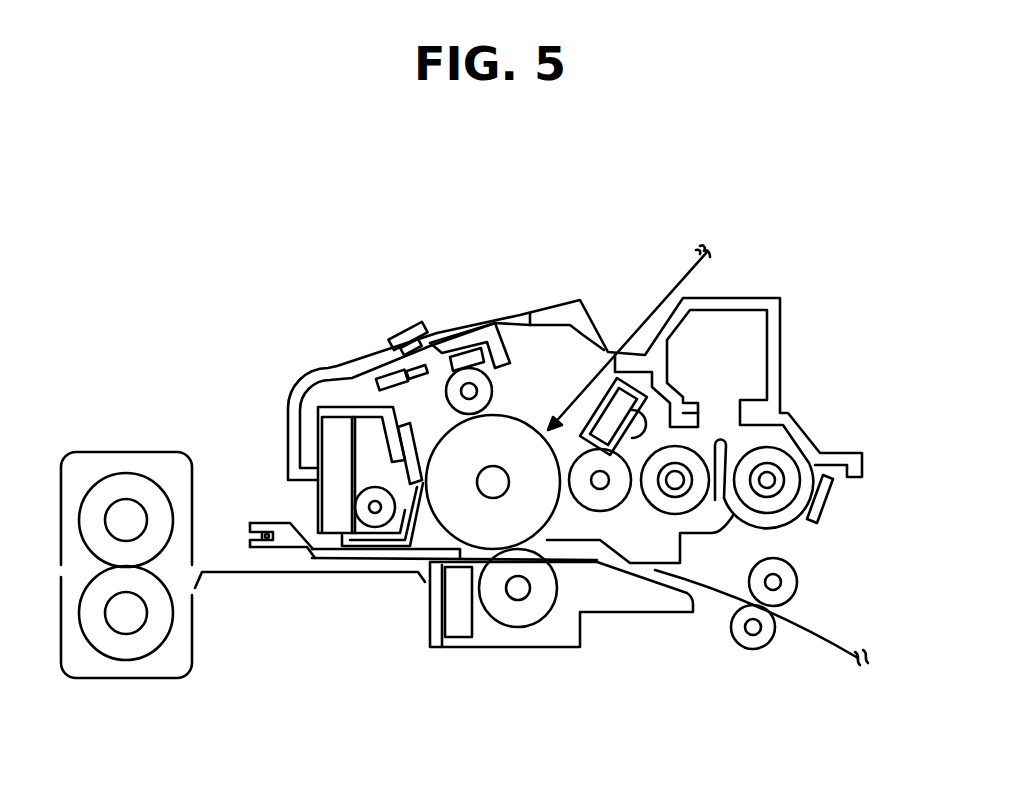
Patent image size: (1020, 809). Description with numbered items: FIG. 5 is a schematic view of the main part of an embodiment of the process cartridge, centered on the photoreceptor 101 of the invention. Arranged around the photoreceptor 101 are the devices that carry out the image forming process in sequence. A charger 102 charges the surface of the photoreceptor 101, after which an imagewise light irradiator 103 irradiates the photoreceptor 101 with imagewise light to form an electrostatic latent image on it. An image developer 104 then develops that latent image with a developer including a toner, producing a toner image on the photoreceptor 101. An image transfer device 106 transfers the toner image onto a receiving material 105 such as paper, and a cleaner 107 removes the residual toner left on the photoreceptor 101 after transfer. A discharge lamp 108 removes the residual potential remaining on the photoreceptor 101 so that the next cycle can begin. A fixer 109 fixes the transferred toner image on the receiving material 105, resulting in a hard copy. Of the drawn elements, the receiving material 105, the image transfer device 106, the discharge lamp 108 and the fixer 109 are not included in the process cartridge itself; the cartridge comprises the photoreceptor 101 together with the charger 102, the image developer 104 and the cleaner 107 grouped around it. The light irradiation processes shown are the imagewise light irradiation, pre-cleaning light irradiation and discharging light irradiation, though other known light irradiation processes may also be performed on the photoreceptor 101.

The photoreceptor 101 is at (510, 412).
The charger 102 is at (512, 382).
The imagewise light irradiator 103 is at (668, 288).
The image developer 104 is at (635, 507).
The receiving material 105 is at (833, 637).
The image transfer device 106 is at (545, 627).
The cleaner 107 is at (407, 472).
The discharge lamp 108 is at (405, 330).
The fixer 109 is at (128, 476).